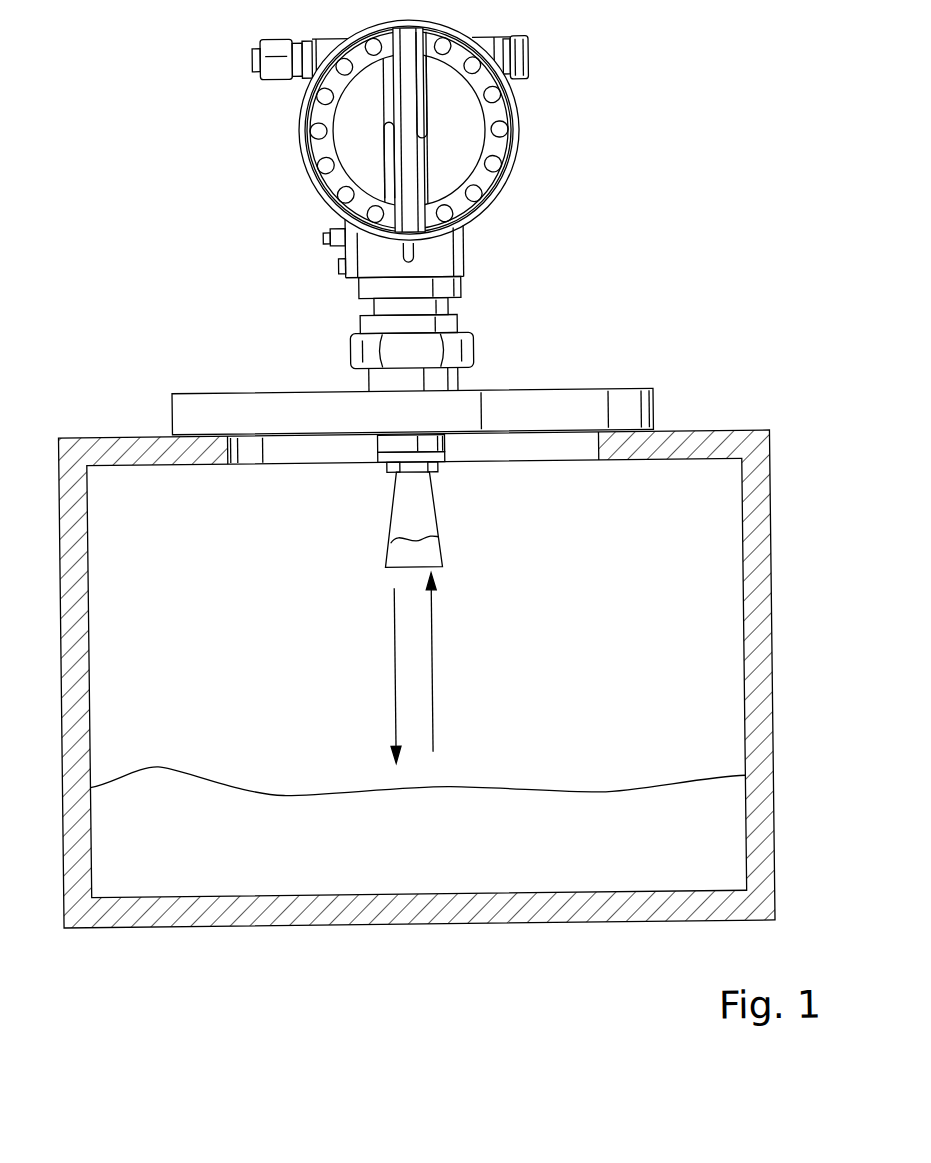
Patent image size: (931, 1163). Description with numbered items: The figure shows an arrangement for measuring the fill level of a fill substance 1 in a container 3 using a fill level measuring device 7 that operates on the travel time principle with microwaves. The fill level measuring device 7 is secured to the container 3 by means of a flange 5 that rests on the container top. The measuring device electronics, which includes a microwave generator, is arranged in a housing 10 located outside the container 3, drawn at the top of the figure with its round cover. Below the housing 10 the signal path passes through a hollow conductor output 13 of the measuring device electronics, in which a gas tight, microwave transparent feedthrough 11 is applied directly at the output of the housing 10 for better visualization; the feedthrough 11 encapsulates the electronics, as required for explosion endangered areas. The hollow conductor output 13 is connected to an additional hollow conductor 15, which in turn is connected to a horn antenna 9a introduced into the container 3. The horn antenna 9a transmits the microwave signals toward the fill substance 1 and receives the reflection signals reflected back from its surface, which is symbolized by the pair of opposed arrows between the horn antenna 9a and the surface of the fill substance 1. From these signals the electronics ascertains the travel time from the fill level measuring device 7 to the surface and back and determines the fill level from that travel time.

The fill substance 1 is at (442, 856).
The container 3 is at (750, 695).
The flange 5 is at (192, 401).
The fill level measuring device 7 is at (427, 293).
The horn antenna 9a is at (413, 508).
The housing 10 is at (309, 130).
The feedthrough 11 is at (376, 308).
The hollow conductor output 13 is at (462, 291).
The additional hollow conductor 15 is at (455, 322).